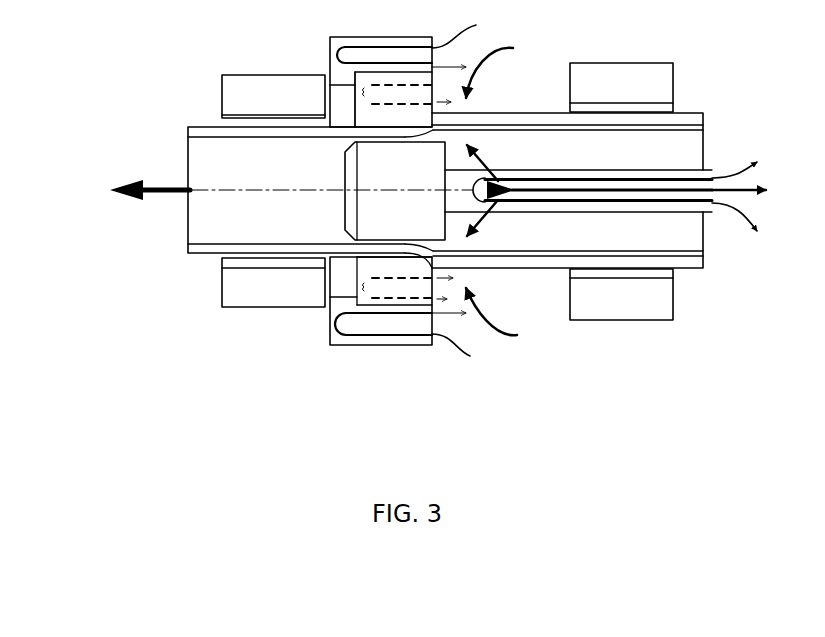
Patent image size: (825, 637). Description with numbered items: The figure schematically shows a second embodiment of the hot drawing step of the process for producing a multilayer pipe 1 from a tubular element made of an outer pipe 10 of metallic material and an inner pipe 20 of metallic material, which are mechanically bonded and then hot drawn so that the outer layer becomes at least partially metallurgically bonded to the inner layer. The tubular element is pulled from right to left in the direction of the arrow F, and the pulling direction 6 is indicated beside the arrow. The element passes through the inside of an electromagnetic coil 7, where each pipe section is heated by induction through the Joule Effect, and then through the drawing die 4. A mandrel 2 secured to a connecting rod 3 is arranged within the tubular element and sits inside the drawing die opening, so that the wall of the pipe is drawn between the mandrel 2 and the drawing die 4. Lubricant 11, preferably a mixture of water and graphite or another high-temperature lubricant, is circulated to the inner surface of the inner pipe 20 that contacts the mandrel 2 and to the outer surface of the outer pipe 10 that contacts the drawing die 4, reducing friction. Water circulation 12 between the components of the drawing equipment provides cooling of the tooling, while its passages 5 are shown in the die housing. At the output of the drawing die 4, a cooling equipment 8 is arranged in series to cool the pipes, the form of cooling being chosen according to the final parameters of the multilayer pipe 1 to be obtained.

The multilayer pipe 1 is at (195, 272).
The mandrel 2 is at (360, 215).
The connecting rod 3 is at (638, 173).
The drawing die 4 is at (382, 95).
The channel / slot 5 is at (360, 325).
The pushing force direction F 6 is at (130, 135).
The electromagnetic coil 7 is at (645, 73).
The cooling equipment 8 is at (268, 86).
The outer pipe 10 is at (672, 270).
The lubricant 11 is at (632, 196).
The water circulation 12 is at (600, 195).
The inner pipe 20 is at (703, 254).